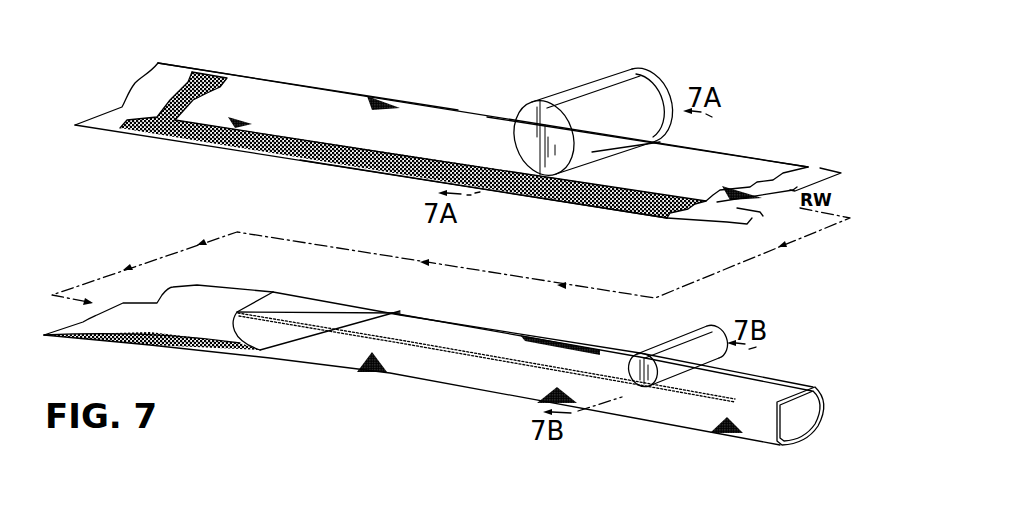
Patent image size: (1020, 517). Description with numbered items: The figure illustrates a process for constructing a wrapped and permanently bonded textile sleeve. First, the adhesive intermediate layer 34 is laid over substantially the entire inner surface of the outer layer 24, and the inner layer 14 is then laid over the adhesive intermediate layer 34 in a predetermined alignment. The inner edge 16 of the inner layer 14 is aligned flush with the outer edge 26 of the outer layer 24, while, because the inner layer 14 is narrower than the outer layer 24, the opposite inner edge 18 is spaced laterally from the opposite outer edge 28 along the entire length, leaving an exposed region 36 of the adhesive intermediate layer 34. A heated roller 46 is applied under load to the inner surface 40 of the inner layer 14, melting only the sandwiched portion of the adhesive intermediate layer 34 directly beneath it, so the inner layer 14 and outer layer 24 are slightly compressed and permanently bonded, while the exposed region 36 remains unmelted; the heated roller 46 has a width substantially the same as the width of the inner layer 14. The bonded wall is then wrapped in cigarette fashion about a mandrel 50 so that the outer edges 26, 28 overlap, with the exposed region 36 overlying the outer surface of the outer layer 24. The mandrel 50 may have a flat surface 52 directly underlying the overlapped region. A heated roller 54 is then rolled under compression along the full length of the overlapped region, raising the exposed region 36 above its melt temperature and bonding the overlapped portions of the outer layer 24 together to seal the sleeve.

The inner layer 14 is at (427, 117).
The inner edge 16 is at (458, 110).
The inner edge 18 is at (376, 148).
The outer layer 24 is at (122, 112).
The outer edge 26 is at (487, 117).
The outer edge 28 is at (385, 174).
The adhesive intermediate layer 34 is at (236, 125).
The exposed region 36 is at (732, 214).
The inner surface 40 is at (248, 88).
The heated roller 46 is at (553, 103).
The mandrel 50 is at (800, 418).
The flat surface 52 is at (322, 311).
The heated roller 54 is at (672, 343).